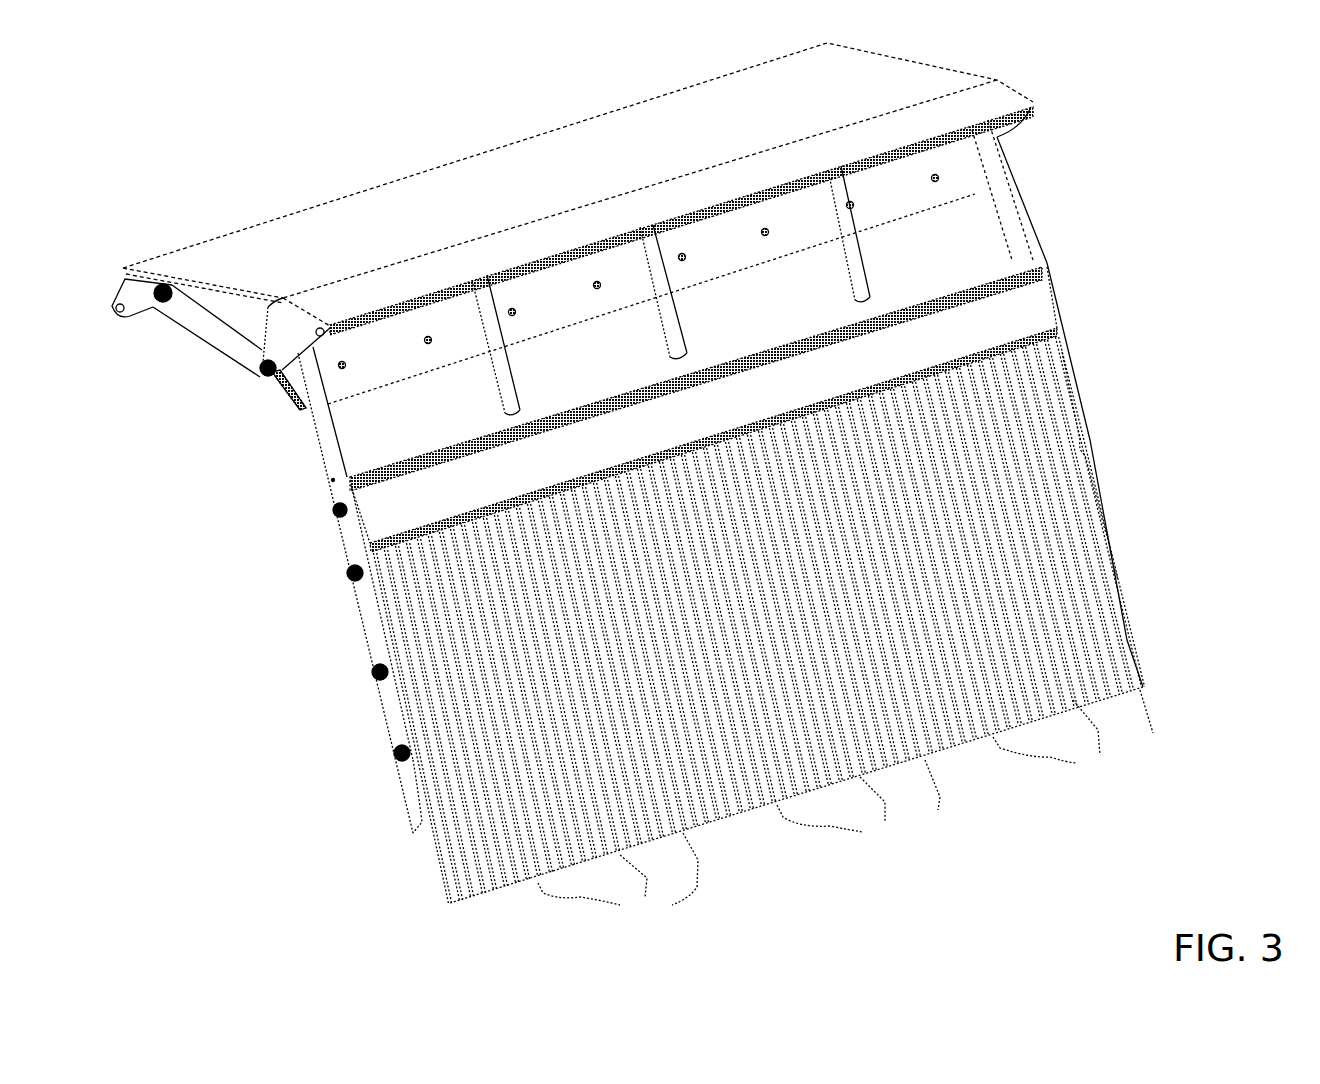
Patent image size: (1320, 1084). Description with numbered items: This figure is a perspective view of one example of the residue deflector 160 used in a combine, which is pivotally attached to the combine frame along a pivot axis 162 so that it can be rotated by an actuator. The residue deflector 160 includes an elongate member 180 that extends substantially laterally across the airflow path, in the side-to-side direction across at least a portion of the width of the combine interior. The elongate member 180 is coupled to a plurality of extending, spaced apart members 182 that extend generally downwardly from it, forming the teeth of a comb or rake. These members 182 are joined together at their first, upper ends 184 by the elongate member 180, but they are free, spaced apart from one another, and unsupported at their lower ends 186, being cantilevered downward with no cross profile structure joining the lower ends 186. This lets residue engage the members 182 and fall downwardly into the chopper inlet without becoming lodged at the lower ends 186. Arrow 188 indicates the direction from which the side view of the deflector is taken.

The residue deflector 160 is at (1042, 102).
The pivot axis 162 is at (252, 376).
The elongate member 180 is at (930, 238).
The extending, spaced apart members 182 is at (915, 828).
The first (upper) ends 184 is at (1058, 262).
The lower ends 186 is at (1162, 681).
The arrow 188 is at (298, 708).